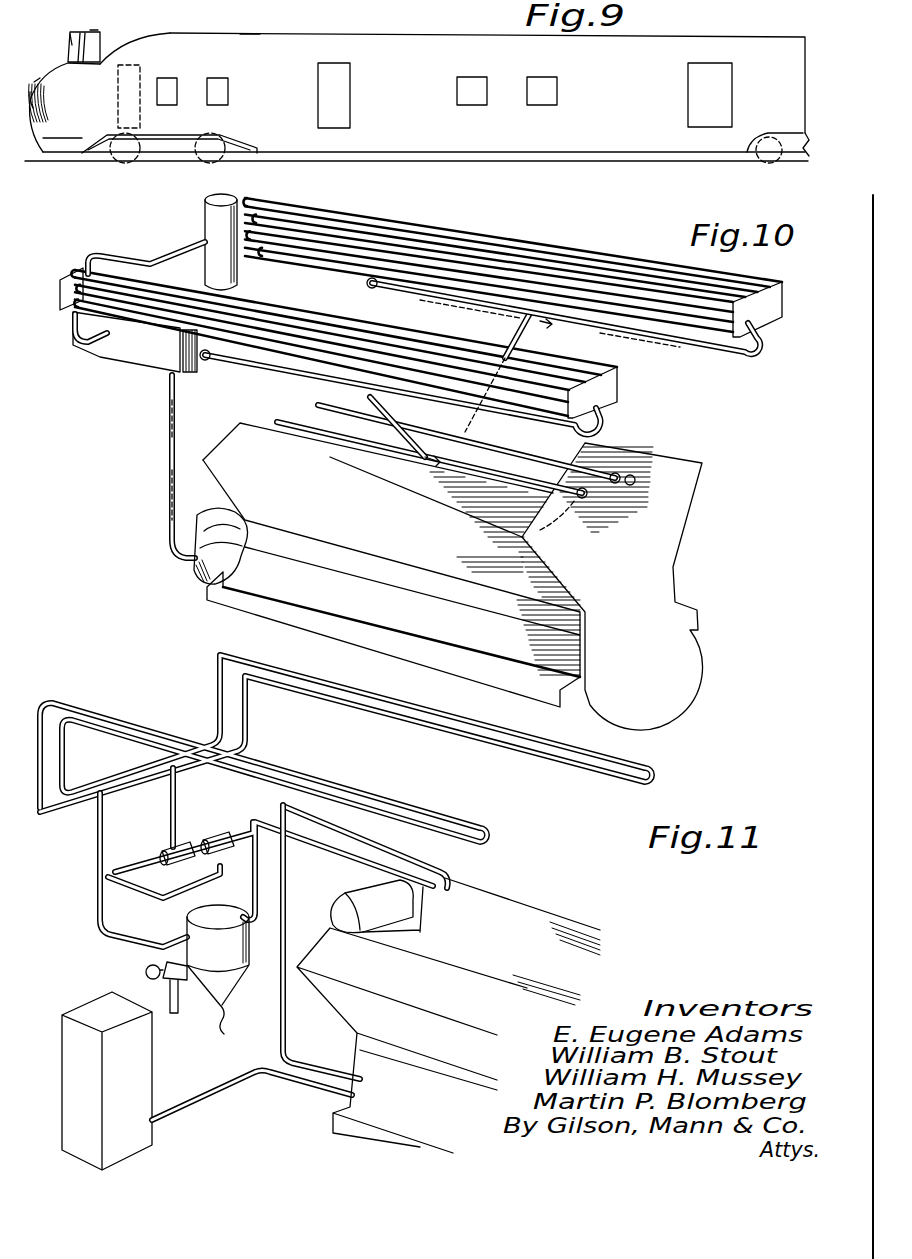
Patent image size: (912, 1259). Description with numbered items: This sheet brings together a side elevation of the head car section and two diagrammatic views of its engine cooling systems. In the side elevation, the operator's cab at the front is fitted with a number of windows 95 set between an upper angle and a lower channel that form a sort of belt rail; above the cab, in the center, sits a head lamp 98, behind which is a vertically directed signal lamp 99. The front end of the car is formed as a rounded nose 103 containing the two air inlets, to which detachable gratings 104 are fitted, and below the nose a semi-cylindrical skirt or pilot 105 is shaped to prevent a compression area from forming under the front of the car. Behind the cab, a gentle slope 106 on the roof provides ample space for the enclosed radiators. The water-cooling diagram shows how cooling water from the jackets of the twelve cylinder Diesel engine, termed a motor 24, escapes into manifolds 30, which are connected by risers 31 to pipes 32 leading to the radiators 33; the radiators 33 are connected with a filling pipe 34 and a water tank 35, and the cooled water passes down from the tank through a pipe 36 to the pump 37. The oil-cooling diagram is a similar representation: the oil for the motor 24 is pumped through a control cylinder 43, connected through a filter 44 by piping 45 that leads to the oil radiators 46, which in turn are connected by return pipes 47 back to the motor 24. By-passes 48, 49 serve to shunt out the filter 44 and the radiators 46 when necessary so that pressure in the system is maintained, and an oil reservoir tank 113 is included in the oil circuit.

In FIG. 9, the windows 95 is at (98, 50).
In FIG. 9, the head lamp 98 is at (70, 36).
In FIG. 9, the signal lamp 99 is at (95, 30).
In FIG. 9, the rounded nose 103 is at (22, 88).
In FIG. 9, the detachable gratings 104 is at (35, 80).
In FIG. 9, the pilot 105 is at (44, 153).
In FIG. 9, the gentle slope 106 is at (251, 34).
In FIG. 10, the motor 24 is at (452, 576).
In FIG. 11, the motor 24 is at (448, 1015).
In FIG. 10, the manifolds 30 is at (590, 465).
In FIG. 10, the risers 31 is at (528, 332).
In FIG. 10, the pipes 32 is at (747, 362).
In FIG. 10, the radiators 33 is at (536, 247).
In FIG. 10, the filling pipe 34 is at (205, 223).
In FIG. 10, the water tank 35 is at (113, 352).
In FIG. 10, the pipe 36 is at (170, 485).
In FIG. 10, the pump 37 is at (200, 578).
In FIG. 11, the control cylinder 43 is at (372, 906).
In FIG. 11, the filter 44 is at (197, 969).
In FIG. 11, the piping 45 is at (98, 888).
In FIG. 11, the radiators 46 is at (380, 712).
In FIG. 11, the return pipes 47 is at (280, 990).
In FIG. 11, the by-pass 48 is at (222, 834).
In FIG. 11, the by-pass 49 is at (169, 850).
In FIG. 11, the oil reservoir tank 113 is at (146, 1058).